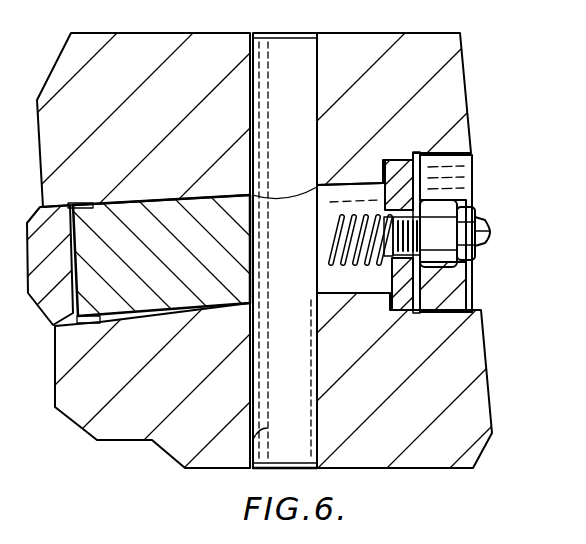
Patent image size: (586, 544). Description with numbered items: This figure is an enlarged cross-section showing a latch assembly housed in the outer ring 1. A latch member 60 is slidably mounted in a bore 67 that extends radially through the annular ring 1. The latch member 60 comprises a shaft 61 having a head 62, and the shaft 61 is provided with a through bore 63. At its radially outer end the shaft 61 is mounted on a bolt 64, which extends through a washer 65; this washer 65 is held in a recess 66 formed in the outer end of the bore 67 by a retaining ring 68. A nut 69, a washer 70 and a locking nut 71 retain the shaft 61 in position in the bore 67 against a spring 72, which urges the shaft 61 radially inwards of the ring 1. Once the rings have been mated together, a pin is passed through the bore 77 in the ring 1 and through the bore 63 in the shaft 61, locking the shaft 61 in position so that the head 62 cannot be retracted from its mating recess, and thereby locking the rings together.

The outer ring 1 is at (205, 33).
The latch member 60 is at (102, 292).
The shaft 61 is at (318, 330).
The head 62 is at (43, 233).
The through bore 63 is at (253, 258).
The bolt 64 is at (490, 225).
The washer 65 is at (403, 190).
The recess 66 is at (412, 305).
The bore 67 is at (170, 315).
The retaining ring 68 is at (420, 158).
The nut 69 is at (447, 277).
The washer 70 is at (453, 266).
The locking nut 71 is at (470, 237).
The spring 72 is at (355, 185).
The bore 77 is at (242, 447).